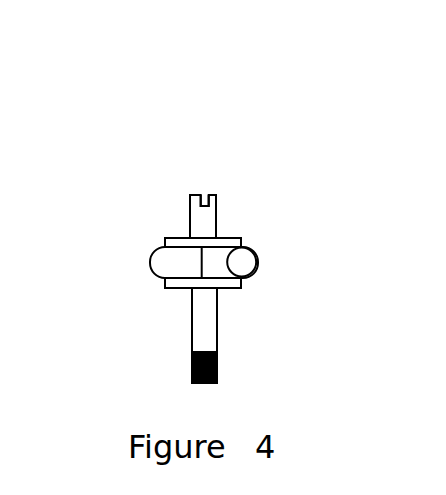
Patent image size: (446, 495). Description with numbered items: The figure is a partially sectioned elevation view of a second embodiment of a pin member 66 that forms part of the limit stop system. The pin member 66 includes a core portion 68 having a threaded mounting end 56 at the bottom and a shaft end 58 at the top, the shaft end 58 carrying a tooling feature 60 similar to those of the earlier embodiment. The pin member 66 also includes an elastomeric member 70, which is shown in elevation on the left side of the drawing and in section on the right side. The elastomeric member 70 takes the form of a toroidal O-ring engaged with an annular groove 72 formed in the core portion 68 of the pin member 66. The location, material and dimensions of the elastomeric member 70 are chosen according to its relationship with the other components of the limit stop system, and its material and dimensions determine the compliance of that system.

The threaded mounting end 56 is at (218, 369).
The shaft end 58 is at (215, 217).
The tooling feature 60 is at (201, 194).
The pin member 66 is at (280, 194).
The core portion 68 is at (190, 217).
The elastomeric member 70 is at (172, 260).
The annular groove 72 is at (215, 265).